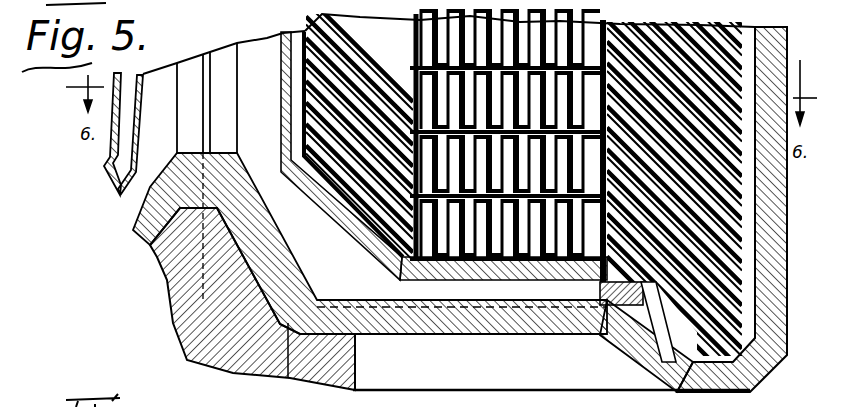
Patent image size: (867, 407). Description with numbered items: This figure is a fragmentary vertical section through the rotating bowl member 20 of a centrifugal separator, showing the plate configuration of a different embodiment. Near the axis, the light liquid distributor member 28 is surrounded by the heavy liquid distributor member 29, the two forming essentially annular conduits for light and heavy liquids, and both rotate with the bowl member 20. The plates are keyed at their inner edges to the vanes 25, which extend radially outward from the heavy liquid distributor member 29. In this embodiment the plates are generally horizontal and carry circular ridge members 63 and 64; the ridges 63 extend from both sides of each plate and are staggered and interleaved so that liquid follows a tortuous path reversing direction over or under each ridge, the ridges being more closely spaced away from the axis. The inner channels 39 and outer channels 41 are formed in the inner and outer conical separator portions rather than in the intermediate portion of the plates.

The bowl member 20 is at (760, 366).
The vanes 25 is at (316, 22).
The light liquid distributor member 28 is at (283, 42).
The heavy liquid distributor member 29 is at (302, 77).
The inner channels 39 is at (368, 208).
The outer channels 41 is at (663, 283).
The circular ridge members 63 is at (450, 27).
The circular ridge members 64 is at (418, 233).